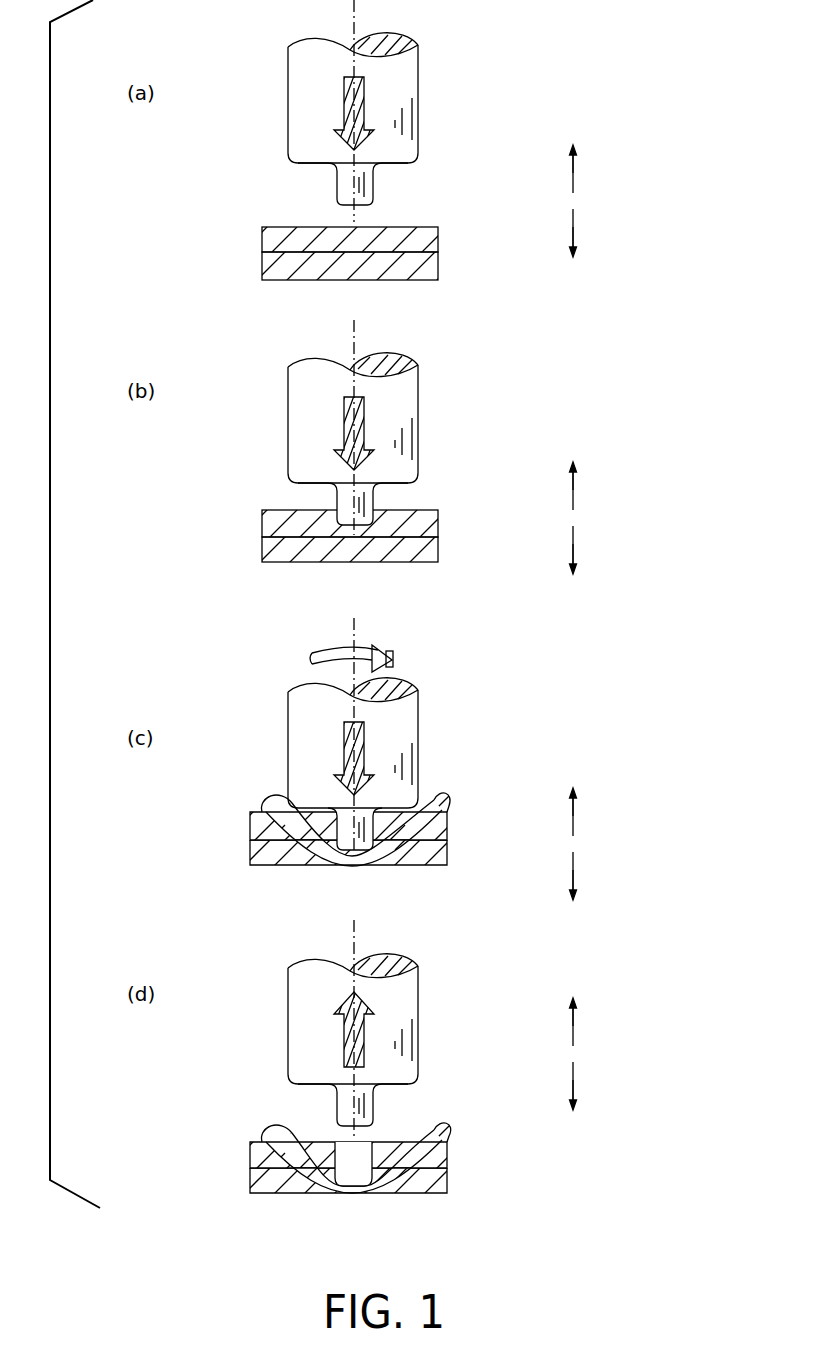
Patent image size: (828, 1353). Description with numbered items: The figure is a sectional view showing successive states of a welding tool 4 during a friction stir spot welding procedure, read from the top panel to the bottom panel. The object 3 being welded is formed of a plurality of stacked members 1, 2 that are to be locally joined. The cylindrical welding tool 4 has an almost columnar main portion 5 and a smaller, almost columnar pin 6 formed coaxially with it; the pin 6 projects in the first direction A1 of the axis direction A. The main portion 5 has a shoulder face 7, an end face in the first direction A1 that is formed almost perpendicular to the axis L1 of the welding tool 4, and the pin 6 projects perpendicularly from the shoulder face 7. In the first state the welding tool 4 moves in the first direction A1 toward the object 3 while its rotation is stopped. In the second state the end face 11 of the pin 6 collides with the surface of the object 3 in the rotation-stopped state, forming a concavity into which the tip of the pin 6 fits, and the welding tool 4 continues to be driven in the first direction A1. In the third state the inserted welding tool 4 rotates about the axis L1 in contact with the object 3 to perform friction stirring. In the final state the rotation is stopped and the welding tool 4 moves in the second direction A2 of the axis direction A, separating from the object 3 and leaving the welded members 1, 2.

The member 1 is at (433, 239).
The member 2 is at (488, 223).
The object 3 is at (377, 710).
The welding tool 4 is at (400, 579).
The main portion 5 is at (418, 134).
The pin 6 is at (366, 181).
The shoulder face 7 is at (300, 167).
The end face 11 is at (352, 207).
The axis L1 is at (356, 13).
The axis direction A is at (628, 145).
The first direction A1 is at (570, 227).
The second direction A2 is at (570, 173).